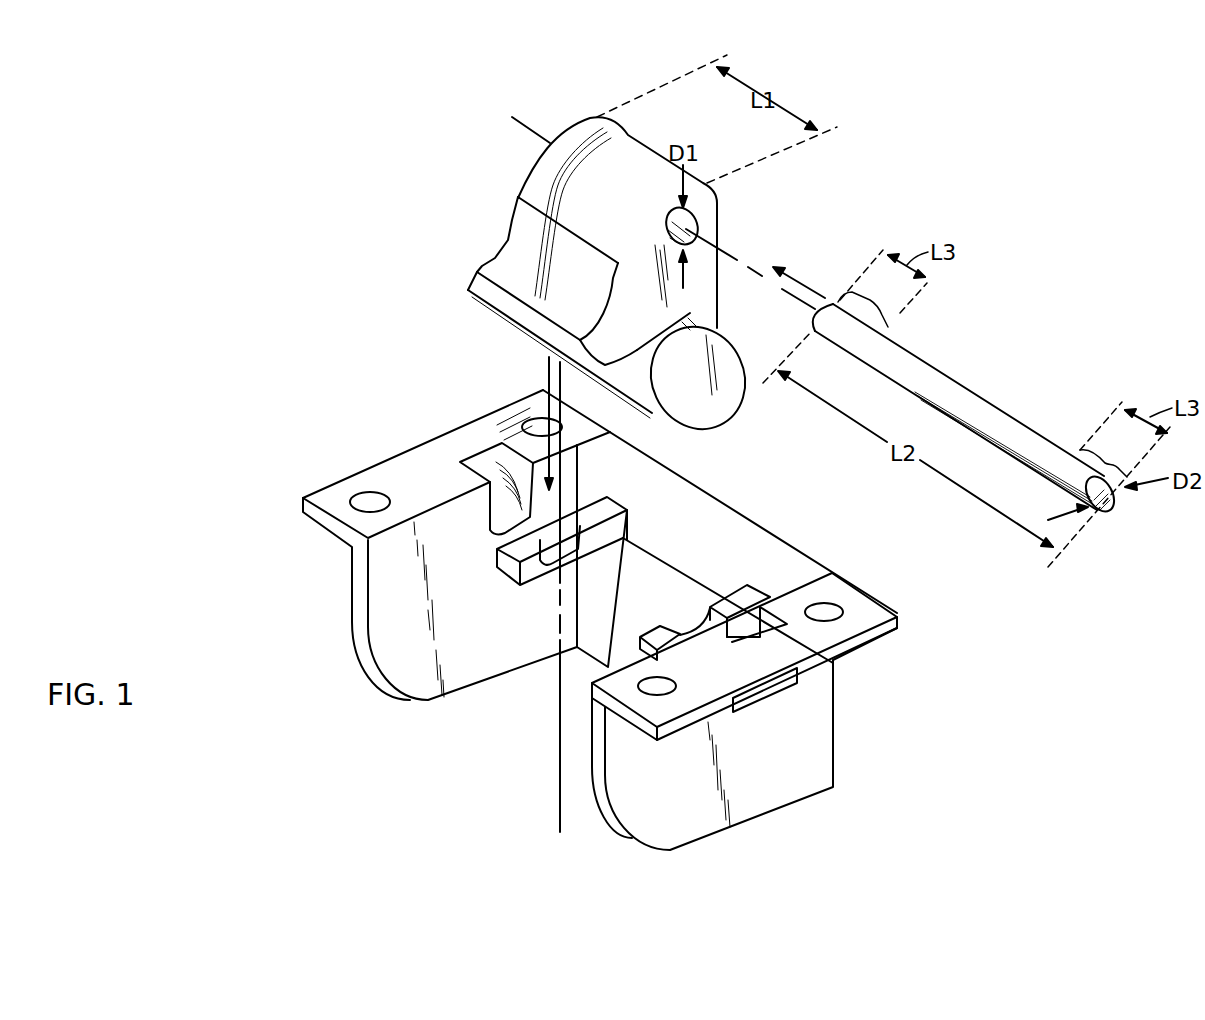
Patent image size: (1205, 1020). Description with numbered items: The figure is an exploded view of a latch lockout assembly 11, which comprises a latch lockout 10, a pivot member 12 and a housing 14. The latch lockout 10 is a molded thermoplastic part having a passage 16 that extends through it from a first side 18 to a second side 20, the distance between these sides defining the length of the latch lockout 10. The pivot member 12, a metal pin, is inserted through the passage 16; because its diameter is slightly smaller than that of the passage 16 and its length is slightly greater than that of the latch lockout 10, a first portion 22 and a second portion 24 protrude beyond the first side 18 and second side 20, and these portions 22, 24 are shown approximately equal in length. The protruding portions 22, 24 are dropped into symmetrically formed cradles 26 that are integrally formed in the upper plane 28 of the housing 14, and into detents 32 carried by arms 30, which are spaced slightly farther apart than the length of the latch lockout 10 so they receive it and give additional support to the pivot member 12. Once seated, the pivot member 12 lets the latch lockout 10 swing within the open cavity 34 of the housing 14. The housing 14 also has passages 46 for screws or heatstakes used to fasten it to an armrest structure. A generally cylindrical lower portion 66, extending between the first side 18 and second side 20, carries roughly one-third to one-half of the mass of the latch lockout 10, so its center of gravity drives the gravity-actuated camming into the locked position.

The latch lockout 10 is at (552, 94).
The latch lockout assembly 11 is at (229, 62).
The pivot member 12 is at (995, 369).
The housing 14 is at (752, 462).
The passage 16 is at (700, 222).
The first side 18 is at (651, 317).
The second side 20 is at (527, 178).
The first portion 22 is at (1108, 452).
The second portion 24 is at (867, 303).
The cradles 26 is at (490, 476).
The upper plane 28 is at (430, 493).
The arms 30 is at (610, 507).
The detents 32 is at (573, 533).
The cavity 34 is at (543, 688).
The passages 46 is at (368, 498).
The lower portion 66 is at (697, 398).